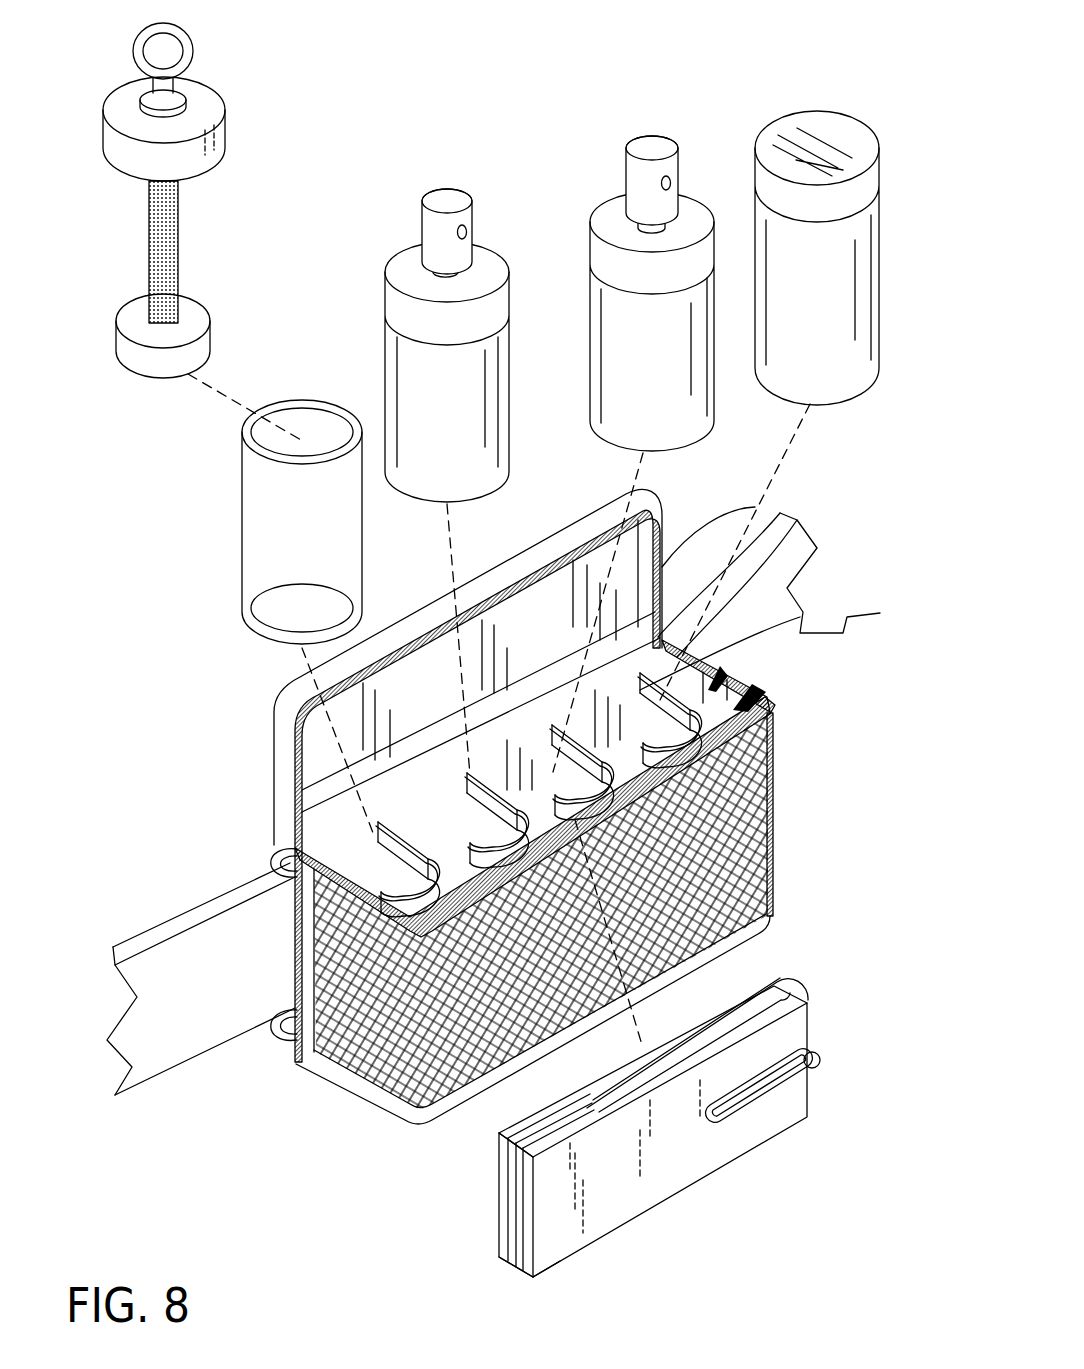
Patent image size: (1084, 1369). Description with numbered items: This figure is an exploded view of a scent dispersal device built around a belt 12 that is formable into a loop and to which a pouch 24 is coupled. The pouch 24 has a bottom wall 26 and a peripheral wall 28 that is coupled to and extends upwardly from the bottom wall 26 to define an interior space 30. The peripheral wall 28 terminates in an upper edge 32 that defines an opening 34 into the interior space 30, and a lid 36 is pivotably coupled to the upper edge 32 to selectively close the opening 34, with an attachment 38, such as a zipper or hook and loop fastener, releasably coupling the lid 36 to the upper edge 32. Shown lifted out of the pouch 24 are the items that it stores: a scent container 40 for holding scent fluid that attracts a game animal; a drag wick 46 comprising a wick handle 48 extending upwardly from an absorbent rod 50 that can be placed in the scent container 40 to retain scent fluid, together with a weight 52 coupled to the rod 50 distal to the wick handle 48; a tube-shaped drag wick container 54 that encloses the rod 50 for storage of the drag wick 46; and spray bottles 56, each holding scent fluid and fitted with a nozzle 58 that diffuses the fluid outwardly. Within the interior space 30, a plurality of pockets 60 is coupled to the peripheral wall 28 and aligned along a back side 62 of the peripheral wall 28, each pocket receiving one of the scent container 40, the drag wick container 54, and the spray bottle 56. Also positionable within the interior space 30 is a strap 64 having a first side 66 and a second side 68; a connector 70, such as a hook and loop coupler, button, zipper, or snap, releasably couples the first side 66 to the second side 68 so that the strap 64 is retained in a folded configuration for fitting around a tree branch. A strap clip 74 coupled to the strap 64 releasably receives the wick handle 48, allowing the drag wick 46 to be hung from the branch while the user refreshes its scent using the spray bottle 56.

The belt 12 is at (160, 1045).
The pouch 24 is at (537, 856).
The bottom wall 26 is at (345, 1092).
The peripheral wall 28 is at (756, 853).
The interior space 30 is at (767, 687).
The upper edge 32 is at (247, 903).
The opening 34 is at (778, 652).
The lid 36 is at (278, 732).
The attachment 38 is at (293, 731).
The scent container 40 is at (874, 263).
The drag wick 46 is at (215, 108).
The wick handle 48 is at (188, 44).
The rod 50 is at (153, 240).
The weight 52 is at (127, 352).
The drag wick container 54 is at (247, 528).
The spray bottle 56 is at (603, 222).
The nozzle 58 is at (444, 199).
The plurality of pockets 60 is at (787, 590).
The back side 62 is at (330, 838).
The strap 64 is at (640, 1160).
The first side 66 is at (497, 1137).
The second side 68 is at (560, 1233).
The connector 70 is at (512, 1260).
The strap clip 74 is at (823, 1067).